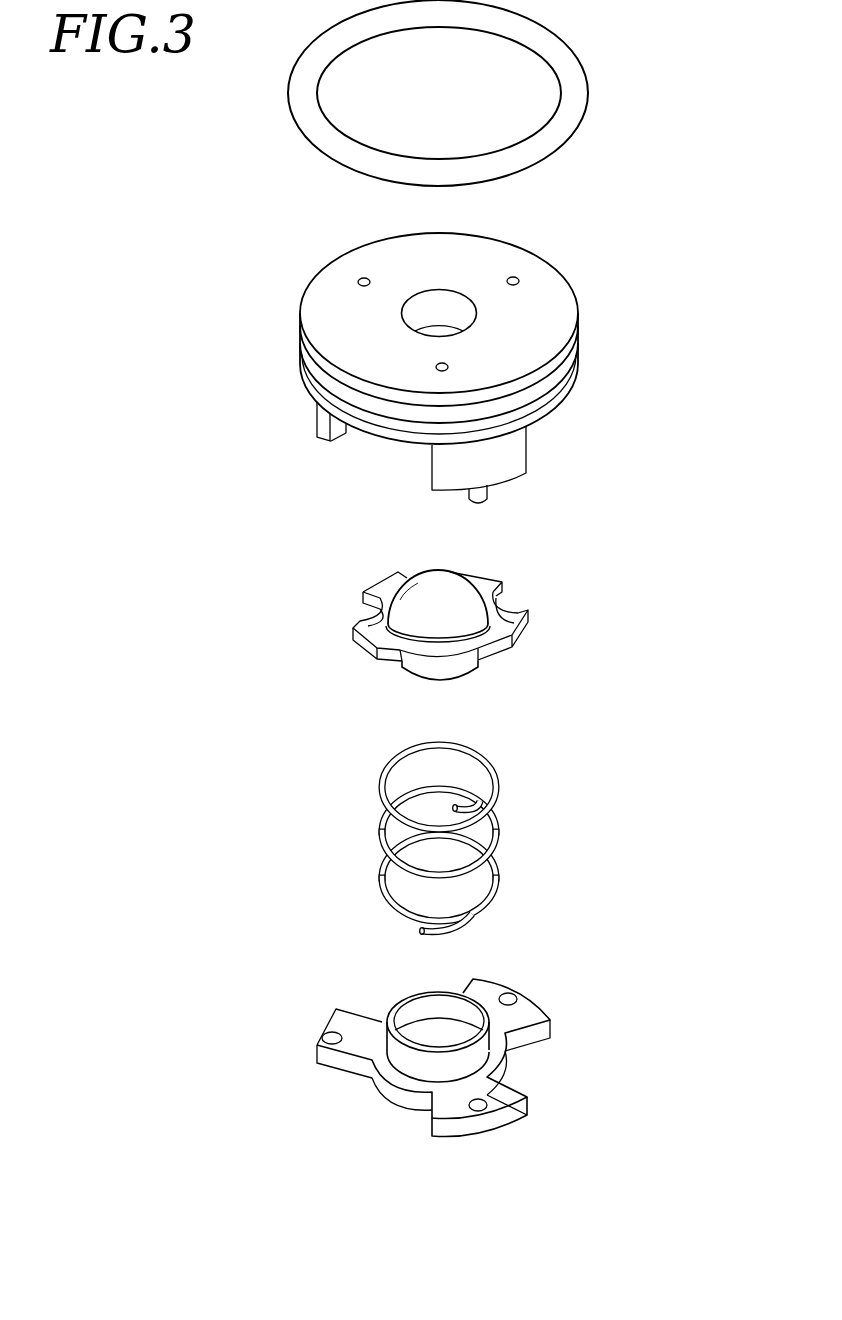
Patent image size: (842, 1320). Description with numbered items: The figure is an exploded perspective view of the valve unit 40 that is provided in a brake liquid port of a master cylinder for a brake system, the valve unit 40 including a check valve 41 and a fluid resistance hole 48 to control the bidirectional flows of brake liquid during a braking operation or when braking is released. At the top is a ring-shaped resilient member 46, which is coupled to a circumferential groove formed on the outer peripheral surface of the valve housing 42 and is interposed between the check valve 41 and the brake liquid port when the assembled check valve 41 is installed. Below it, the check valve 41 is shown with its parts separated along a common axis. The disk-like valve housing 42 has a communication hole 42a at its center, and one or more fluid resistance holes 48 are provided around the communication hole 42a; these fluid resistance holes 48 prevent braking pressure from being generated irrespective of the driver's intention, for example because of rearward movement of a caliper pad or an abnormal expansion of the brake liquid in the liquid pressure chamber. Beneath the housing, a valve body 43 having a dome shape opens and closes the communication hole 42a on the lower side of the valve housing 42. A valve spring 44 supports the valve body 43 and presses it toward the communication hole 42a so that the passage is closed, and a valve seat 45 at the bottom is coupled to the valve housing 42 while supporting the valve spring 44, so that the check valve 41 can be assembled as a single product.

The valve unit 40 is at (719, 167).
The check valve 41 is at (296, 252).
The valve housing 42 is at (453, 352).
The communication hole 42a is at (447, 308).
The valve body 43 is at (479, 576).
The valve spring 44 is at (492, 770).
The valve seat 45 is at (530, 1010).
The resilient member 46 is at (578, 95).
The fluid resistance hole 48 is at (515, 281).